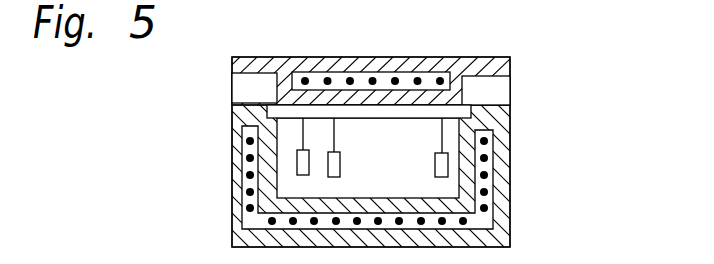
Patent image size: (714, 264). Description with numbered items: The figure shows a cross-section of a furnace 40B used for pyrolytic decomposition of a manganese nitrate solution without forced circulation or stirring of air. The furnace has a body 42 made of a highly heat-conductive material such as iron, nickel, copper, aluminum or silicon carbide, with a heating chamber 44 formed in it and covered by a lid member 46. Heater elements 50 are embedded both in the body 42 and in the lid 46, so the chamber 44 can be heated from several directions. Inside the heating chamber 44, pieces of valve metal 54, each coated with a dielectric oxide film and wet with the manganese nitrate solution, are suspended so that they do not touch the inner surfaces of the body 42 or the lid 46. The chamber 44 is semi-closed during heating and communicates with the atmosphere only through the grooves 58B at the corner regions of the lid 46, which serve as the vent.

The furnace 40B is at (512, 112).
The body 42 is at (510, 143).
The heating chamber 44 is at (420, 183).
The lid member 46 is at (476, 66).
The heater elements 50 is at (425, 73).
The valve metal 54 is at (341, 153).
The grooves 58B is at (240, 87).